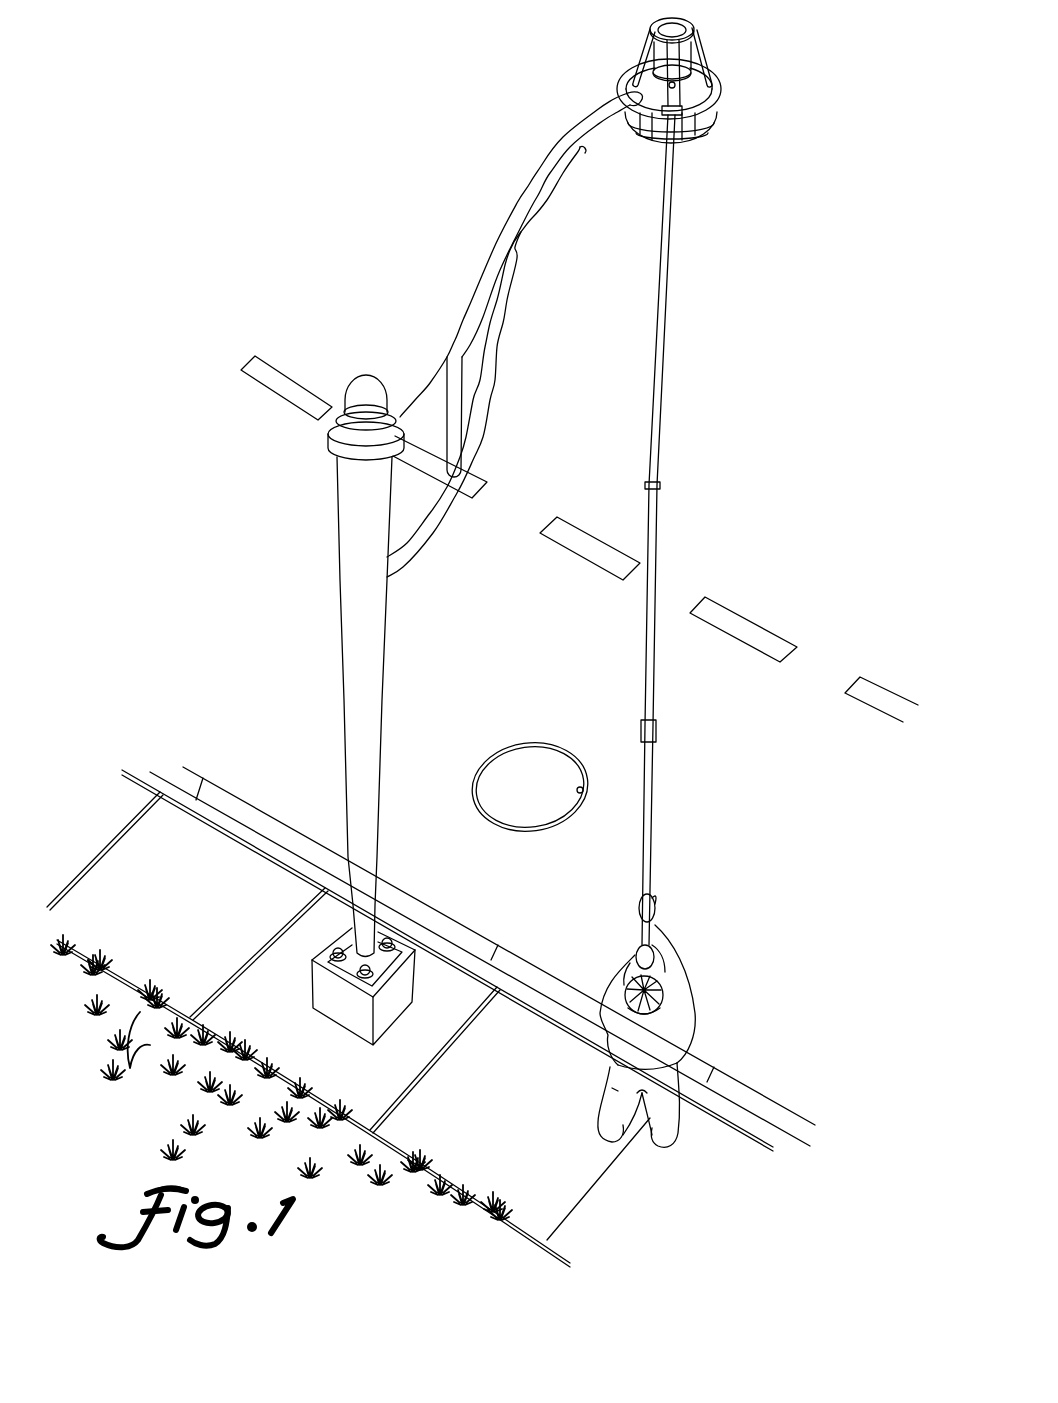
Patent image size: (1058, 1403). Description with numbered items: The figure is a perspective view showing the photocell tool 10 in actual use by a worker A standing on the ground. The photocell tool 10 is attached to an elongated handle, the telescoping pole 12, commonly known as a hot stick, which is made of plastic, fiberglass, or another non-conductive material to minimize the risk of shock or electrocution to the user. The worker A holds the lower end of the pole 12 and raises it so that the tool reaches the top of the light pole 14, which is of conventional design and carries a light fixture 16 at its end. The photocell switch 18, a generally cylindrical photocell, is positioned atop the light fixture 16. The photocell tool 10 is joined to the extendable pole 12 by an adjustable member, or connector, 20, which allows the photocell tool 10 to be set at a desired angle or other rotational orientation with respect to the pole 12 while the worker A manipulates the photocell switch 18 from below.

The photocell tool 10 is at (718, 24).
The telescoping pole 12 is at (688, 351).
The light pole 14 is at (407, 613).
The light fixture 16 is at (746, 94).
The photocell switch 18 is at (641, 62).
The adjustable member 20 is at (705, 127).
The worker A is at (705, 962).